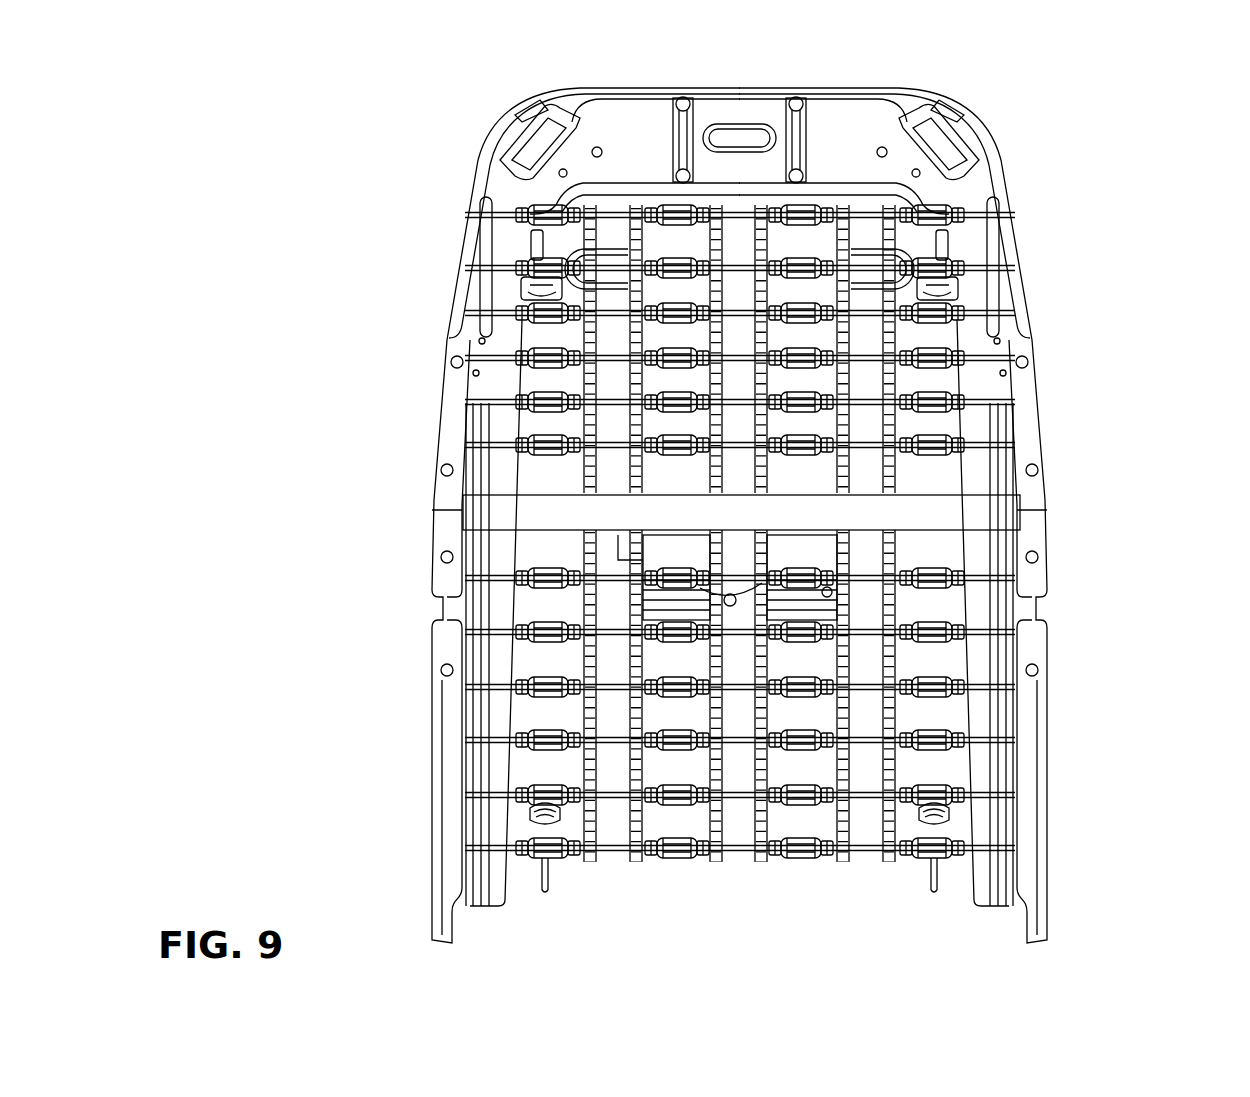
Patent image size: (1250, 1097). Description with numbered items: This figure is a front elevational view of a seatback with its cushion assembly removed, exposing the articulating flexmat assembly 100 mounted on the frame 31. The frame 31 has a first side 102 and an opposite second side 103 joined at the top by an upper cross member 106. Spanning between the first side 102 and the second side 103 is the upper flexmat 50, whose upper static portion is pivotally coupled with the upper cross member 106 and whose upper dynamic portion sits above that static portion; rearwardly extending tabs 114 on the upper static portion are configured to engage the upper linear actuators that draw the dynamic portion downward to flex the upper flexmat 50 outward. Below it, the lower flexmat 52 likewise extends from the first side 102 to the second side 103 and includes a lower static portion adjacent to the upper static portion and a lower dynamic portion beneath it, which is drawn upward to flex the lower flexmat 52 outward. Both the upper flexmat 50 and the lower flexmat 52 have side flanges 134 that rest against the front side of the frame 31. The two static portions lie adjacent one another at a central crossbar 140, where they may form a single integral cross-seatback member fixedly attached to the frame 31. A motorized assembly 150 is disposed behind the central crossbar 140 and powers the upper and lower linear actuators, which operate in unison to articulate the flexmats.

The articulating flexmat assembly 100 is at (1093, 418).
The upper cross member 106 is at (622, 135).
The frame 31 is at (865, 135).
The first side 102 is at (455, 312).
The second side 103 is at (1022, 303).
The side flanges 134 is at (430, 430).
The lower flexmat 52 is at (987, 620).
The upper flexmat 50 is at (930, 238).
The central crossbar 140 is at (560, 518).
The motorized assembly 150 is at (600, 588).
The rearwardly extending tabs 114 is at (533, 247).